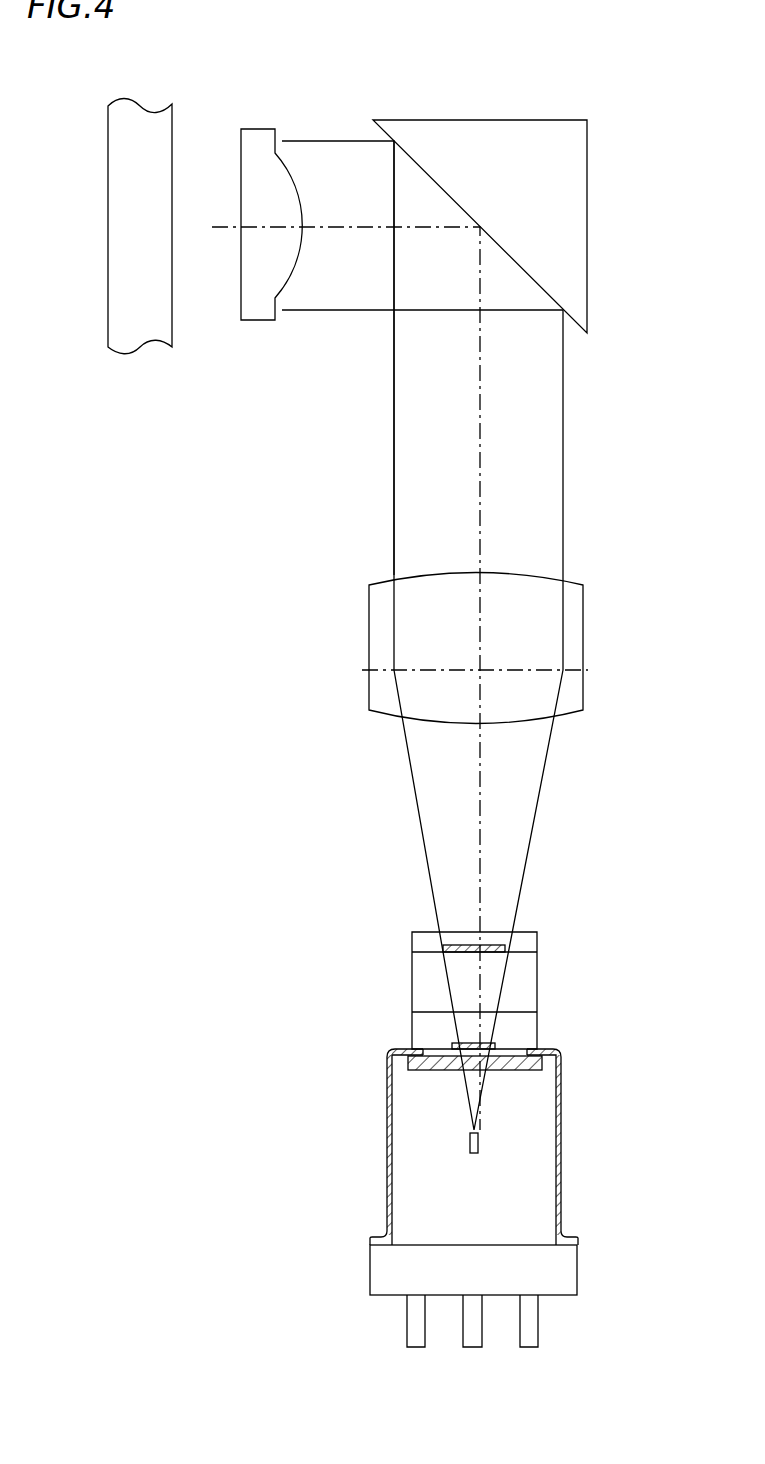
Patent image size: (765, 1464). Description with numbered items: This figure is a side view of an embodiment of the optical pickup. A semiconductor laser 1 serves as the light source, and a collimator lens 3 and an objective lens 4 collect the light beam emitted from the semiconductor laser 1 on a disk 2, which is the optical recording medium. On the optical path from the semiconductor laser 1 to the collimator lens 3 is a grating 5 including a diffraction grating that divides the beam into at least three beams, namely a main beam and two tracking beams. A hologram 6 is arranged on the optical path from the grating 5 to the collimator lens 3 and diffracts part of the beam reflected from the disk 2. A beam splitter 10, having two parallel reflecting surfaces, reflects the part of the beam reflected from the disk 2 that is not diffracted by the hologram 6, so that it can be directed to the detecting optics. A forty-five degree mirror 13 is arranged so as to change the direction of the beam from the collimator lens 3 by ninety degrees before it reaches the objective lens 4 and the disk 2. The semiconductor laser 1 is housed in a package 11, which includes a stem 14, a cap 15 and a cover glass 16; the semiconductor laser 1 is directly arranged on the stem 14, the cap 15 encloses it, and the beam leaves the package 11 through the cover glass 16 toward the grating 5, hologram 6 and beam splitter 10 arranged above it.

The semiconductor laser 1 is at (483, 1142).
The disk 2 is at (140, 338).
The collimator lens 3 is at (580, 640).
The objective lens 4 is at (258, 308).
The grating 5 is at (495, 1044).
The hologram 6 is at (505, 945).
The beam splitter 10 is at (412, 989).
The package 11 is at (385, 1187).
The 45° mirror 13 is at (567, 207).
The stem 14 is at (370, 1277).
The cap 15 is at (563, 1203).
The cover glass 16 is at (408, 1067).